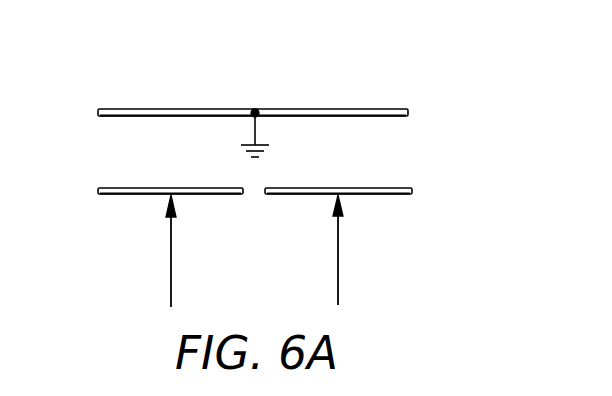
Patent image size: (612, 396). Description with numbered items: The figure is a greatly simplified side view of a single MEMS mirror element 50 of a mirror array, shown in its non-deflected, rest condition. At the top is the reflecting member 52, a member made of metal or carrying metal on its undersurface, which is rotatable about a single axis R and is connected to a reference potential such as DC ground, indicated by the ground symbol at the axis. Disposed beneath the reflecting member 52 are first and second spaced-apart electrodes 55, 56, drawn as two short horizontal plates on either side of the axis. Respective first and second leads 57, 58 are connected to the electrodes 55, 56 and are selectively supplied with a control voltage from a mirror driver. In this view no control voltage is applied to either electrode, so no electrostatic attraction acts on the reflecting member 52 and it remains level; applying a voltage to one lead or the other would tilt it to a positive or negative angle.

The MEMS mirror element 50 is at (422, 71).
The reflecting member 52 is at (193, 108).
The axis of rotation R is at (256, 108).
The first electrode 55 is at (376, 187).
The second electrode 56 is at (135, 187).
The first lead 57 is at (339, 277).
The second lead 58 is at (170, 276).